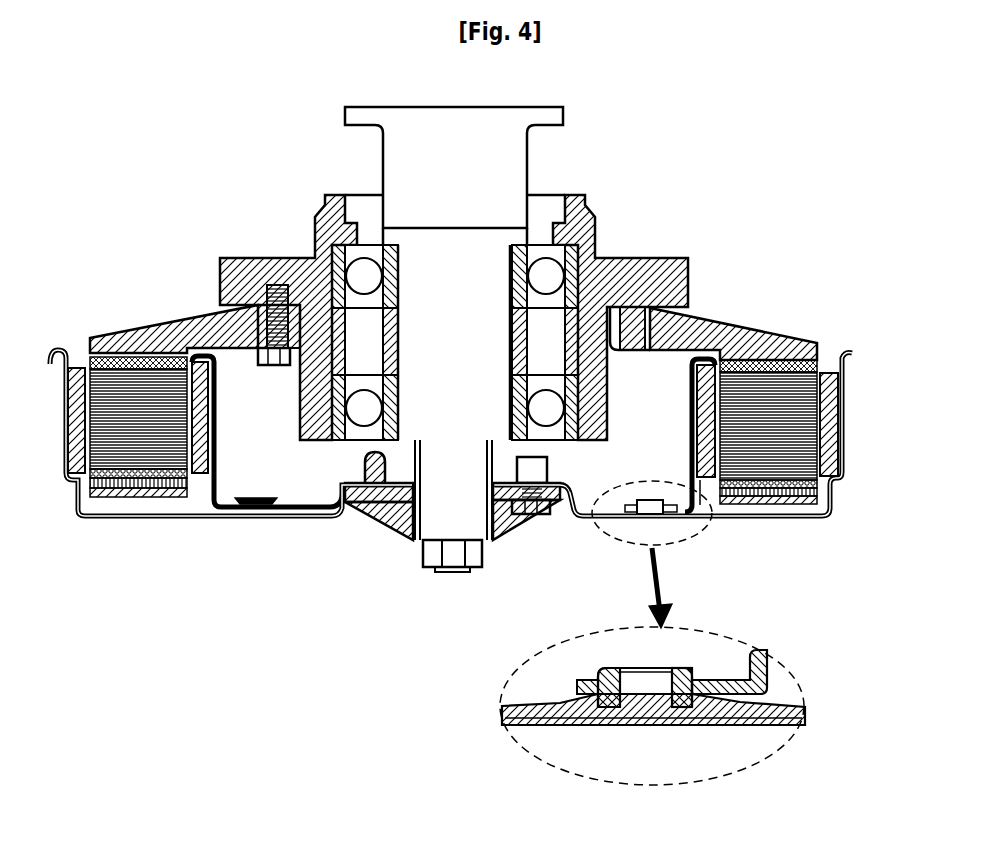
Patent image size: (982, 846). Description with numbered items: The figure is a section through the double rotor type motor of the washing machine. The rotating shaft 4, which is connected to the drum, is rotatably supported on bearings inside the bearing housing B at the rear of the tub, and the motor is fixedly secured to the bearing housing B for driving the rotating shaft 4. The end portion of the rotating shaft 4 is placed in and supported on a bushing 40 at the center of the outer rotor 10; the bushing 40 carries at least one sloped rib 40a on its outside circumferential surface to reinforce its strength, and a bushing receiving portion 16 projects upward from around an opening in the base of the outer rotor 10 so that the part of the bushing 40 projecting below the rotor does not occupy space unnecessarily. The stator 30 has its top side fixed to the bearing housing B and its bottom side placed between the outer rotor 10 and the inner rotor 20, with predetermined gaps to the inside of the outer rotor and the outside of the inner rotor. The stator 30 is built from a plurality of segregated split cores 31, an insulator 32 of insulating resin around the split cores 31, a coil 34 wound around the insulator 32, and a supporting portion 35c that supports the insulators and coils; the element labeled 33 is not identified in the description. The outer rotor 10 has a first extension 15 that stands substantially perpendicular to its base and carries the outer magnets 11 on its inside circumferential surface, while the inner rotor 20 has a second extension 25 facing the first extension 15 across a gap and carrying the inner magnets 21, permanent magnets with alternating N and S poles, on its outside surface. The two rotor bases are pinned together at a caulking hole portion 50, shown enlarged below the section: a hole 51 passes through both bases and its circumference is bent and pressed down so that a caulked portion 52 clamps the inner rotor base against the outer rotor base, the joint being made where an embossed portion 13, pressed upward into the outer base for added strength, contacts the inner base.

The rotating shaft 4 is at (462, 262).
The bearing housing B is at (640, 278).
The outer rotor 10 is at (768, 532).
The outer magnets 11 is at (66, 418).
The embossed portion 13 is at (708, 705).
The first extension 15 is at (840, 427).
The bushing receiving portion 16 is at (590, 507).
The inner rotor 20 is at (685, 398).
The inner magnets 21 is at (210, 448).
The second extension 25 is at (695, 433).
The stator 30 is at (424, 408).
The split cores 31 is at (100, 452).
The insulator 32 is at (101, 497).
The stator core 33 is at (146, 500).
The coil 34 is at (108, 342).
The supporting portion 35c is at (790, 348).
The bushing 40 is at (385, 533).
The rib 40a is at (375, 508).
The caulking hole portion 50 is at (640, 660).
The hole 51 is at (648, 697).
The caulked portion 52 is at (695, 665).